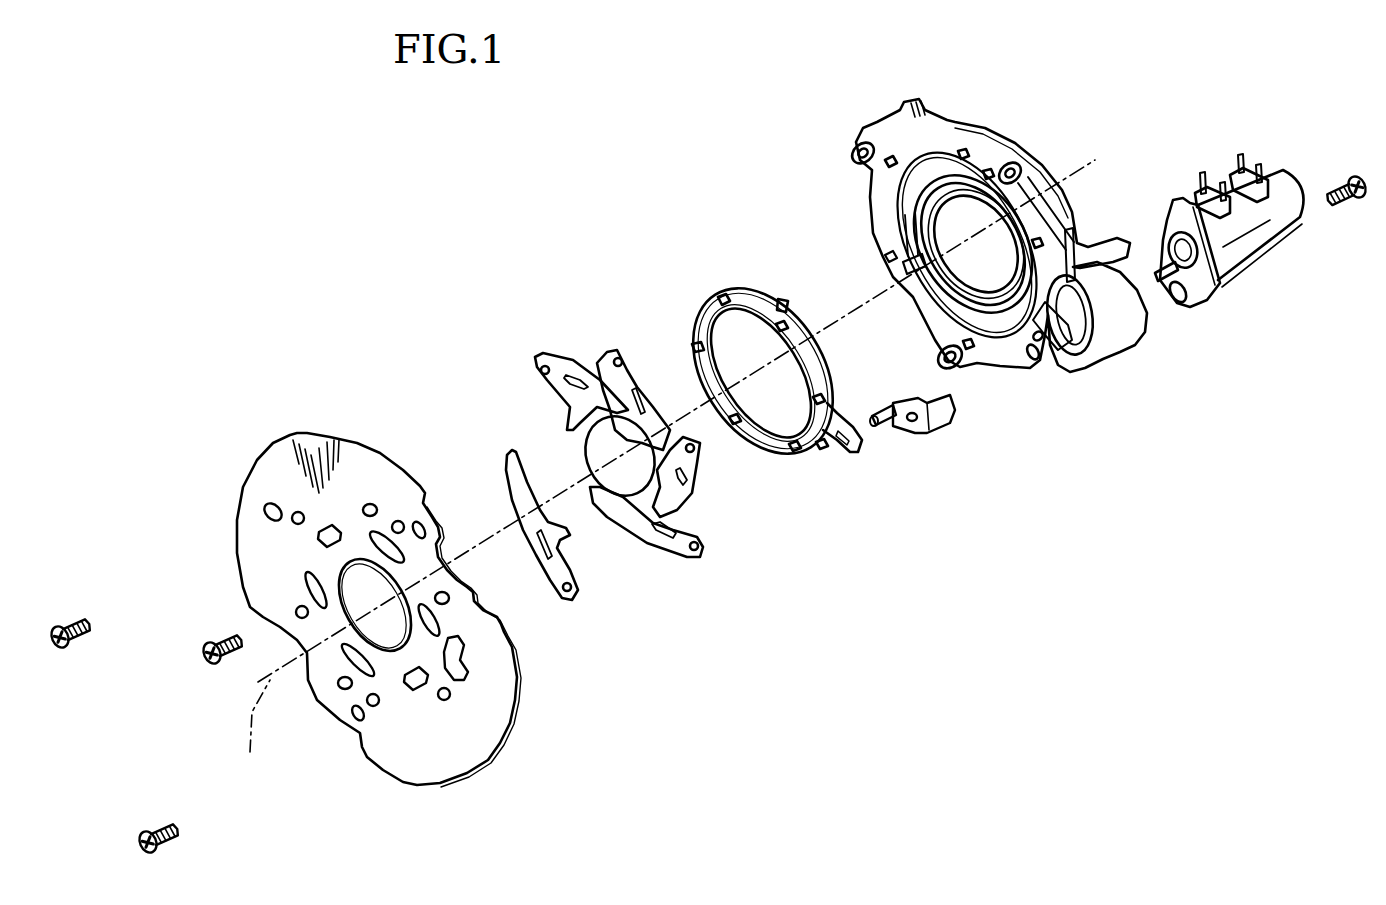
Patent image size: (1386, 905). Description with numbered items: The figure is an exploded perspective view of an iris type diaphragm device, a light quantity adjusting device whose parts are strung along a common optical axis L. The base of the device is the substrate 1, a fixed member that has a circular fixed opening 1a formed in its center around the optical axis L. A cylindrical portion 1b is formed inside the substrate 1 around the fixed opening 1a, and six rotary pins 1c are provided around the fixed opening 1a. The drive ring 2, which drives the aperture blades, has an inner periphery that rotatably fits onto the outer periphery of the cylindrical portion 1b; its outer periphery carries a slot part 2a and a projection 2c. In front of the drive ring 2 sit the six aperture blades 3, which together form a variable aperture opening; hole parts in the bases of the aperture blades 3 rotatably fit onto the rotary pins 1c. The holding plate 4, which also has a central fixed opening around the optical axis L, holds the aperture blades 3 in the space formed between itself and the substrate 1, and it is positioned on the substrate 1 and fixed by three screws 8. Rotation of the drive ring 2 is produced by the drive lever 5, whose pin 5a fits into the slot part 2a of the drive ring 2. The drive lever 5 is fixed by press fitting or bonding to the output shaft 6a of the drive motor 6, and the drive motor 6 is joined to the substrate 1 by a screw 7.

The substrate 1 is at (985, 206).
The fixed opening 1a is at (925, 286).
The cylindrical portion 1b is at (968, 190).
The rotary pins 1c is at (885, 255).
The drive ring 2 is at (773, 369).
The slot part 2a is at (855, 453).
The projection 2c is at (692, 344).
The aperture blades 3 is at (480, 320).
The holding plate 4 is at (297, 440).
The drive lever 5 is at (910, 417).
The pin 5a is at (872, 410).
The drive motor 6 is at (1230, 261).
The output shaft 6a is at (1158, 290).
The screw 7 is at (1352, 205).
The screws 8 is at (233, 635).
The optical axis L is at (254, 723).